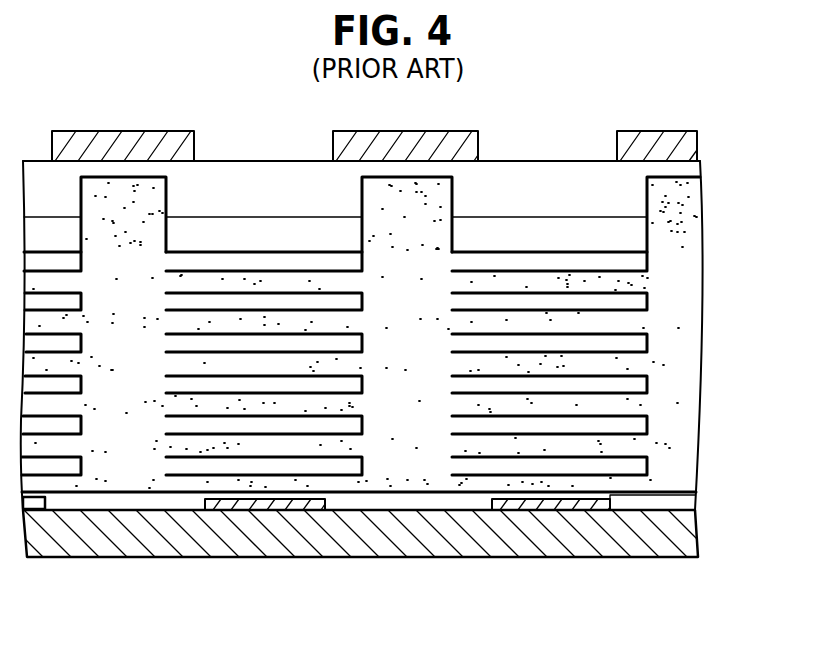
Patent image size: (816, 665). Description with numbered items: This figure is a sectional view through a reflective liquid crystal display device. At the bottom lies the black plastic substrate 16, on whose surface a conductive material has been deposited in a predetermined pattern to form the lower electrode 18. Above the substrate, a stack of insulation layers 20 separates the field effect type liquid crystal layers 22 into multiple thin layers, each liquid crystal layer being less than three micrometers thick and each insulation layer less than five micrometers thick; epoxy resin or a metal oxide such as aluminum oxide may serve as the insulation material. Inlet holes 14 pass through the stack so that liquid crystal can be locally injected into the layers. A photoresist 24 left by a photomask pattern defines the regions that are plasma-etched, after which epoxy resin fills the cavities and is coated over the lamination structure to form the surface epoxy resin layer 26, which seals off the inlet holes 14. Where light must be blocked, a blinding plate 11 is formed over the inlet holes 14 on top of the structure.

The blinding plate 11 is at (194, 133).
The surface epoxy resin layer 26 is at (688, 172).
The photoresist 24 is at (633, 240).
The insulation layer 20 is at (635, 263).
The liquid crystal layer 22 is at (632, 407).
The inlet hole 14 is at (126, 450).
The lower electrode 18 is at (238, 509).
The black plastic substrate 16 is at (648, 550).